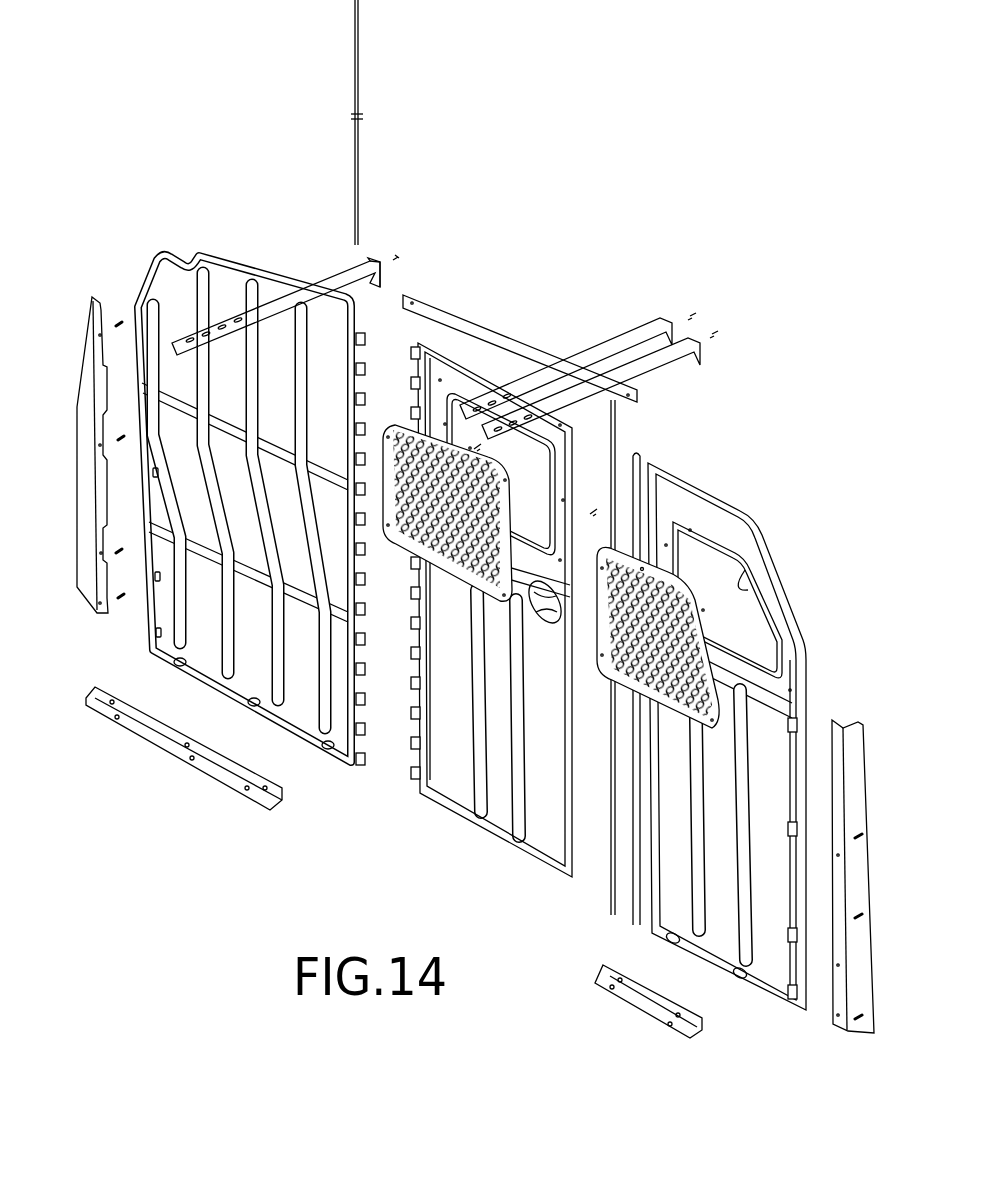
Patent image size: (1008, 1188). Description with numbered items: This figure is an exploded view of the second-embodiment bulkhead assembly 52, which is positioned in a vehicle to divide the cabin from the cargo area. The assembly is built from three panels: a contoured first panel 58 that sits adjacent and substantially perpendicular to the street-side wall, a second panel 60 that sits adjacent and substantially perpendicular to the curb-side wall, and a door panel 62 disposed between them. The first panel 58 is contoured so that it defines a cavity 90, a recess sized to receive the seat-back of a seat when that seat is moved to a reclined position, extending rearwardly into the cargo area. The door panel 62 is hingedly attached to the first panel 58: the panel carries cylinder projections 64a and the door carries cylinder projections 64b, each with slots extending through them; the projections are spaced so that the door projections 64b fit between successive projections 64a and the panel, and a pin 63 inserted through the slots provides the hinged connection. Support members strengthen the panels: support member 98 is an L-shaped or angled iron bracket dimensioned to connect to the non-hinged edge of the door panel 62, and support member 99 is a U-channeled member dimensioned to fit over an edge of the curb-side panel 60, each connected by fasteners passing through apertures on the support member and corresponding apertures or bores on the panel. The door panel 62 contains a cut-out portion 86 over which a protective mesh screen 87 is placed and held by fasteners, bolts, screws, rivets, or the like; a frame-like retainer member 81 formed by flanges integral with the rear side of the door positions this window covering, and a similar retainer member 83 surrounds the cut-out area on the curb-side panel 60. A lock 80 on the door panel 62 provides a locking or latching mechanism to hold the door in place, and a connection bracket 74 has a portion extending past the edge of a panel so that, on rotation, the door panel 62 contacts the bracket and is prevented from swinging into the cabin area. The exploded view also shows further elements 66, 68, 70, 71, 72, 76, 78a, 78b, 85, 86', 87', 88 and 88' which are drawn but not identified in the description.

The bulkhead assembly 52 is at (486, 278).
The first panel 58 is at (150, 272).
The second panel 60 is at (797, 628).
The door panel 62 is at (456, 818).
The pin 63 is at (358, 67).
The cylinder projections 64a is at (370, 748).
The cylinder projections 64b is at (414, 740).
The left mounting strip 66 is at (83, 585).
The right mounting strip 68 is at (866, 760).
The bottom tab 70 is at (748, 973).
The bottom tab 71 is at (733, 980).
The hinge knuckles 72 is at (789, 1005).
The connection bracket 74 is at (455, 318).
The mounting bracket 76 is at (340, 272).
The bottom rail 78a is at (140, 732).
The bottom rail 78b is at (629, 1000).
The lock 80 is at (543, 632).
The retainer member 81 is at (438, 363).
The retainer member 83 is at (700, 508).
The fastener 85 is at (592, 512).
The cut-out portion 86 is at (524, 474).
The window gasket 86' is at (750, 601).
The mesh screen 87 is at (441, 482).
The perforated screen 87' is at (695, 661).
The fastener 88 is at (491, 444).
The fastener 88' is at (682, 564).
The cavity 90 is at (345, 290).
The support member 98 is at (615, 399).
The support member 99 is at (646, 460).